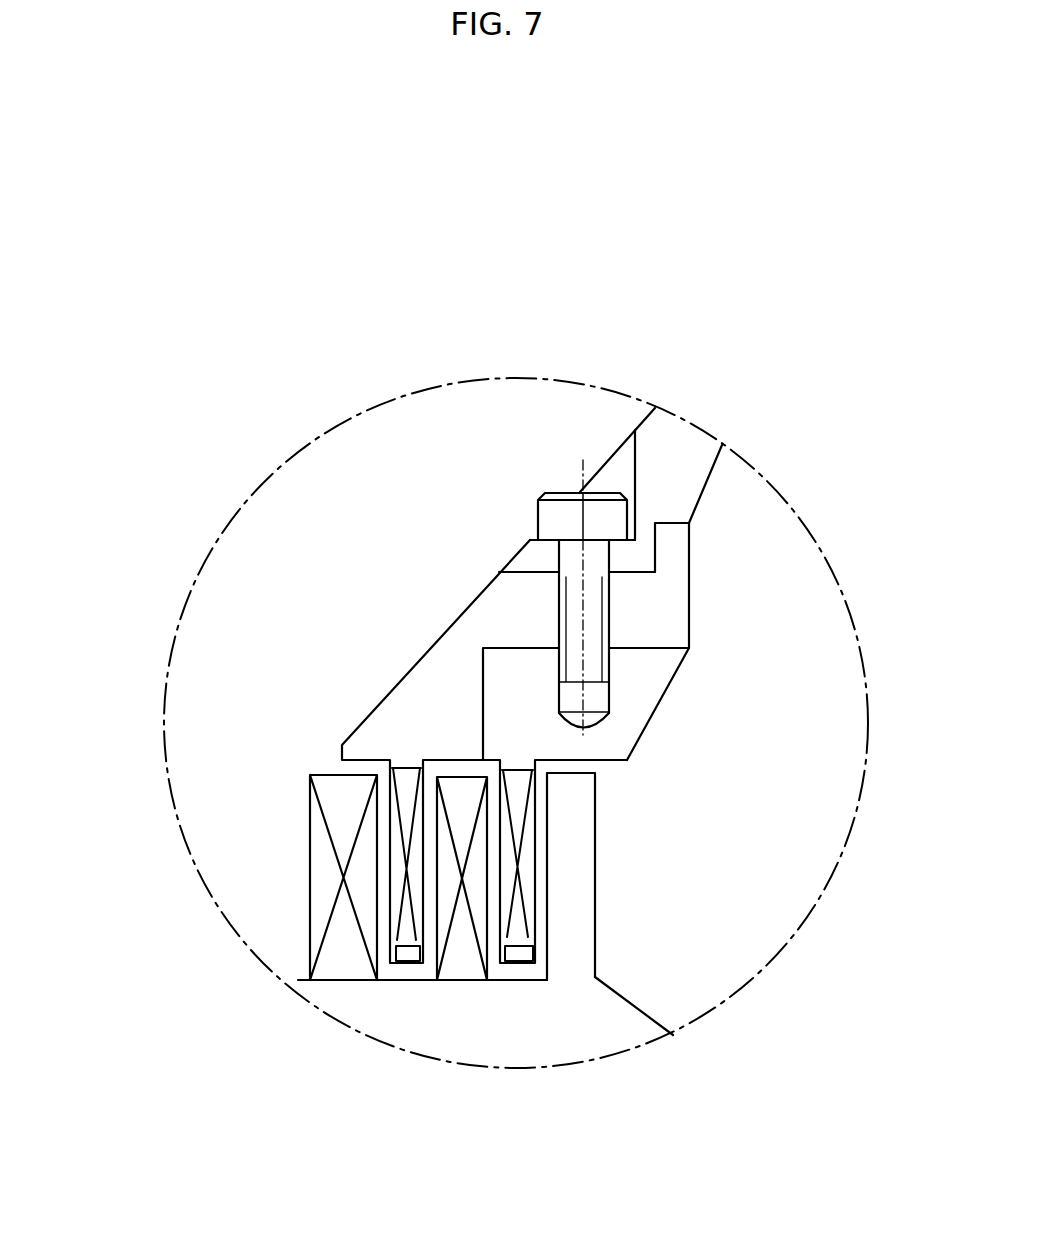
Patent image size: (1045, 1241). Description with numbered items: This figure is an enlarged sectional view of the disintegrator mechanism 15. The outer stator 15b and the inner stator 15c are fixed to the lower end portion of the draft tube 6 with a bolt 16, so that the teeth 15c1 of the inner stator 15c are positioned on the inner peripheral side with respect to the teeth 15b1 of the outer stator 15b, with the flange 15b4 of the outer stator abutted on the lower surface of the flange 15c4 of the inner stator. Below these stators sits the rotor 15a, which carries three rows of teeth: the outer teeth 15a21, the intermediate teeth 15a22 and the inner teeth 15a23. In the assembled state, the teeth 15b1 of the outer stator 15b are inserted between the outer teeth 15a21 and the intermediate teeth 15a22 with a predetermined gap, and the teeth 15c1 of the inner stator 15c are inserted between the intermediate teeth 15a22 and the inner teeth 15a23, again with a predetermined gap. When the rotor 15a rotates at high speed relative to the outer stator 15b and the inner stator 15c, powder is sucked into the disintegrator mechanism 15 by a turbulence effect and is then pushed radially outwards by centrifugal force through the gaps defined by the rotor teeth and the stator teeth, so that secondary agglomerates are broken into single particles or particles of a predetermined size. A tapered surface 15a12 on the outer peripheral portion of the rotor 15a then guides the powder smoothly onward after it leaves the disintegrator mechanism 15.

The draft tube 6 is at (680, 438).
The disintegrator mechanism 15 is at (479, 791).
The rotor 15a is at (598, 803).
The tapered surface 15a12 is at (642, 1007).
The outer teeth 15a21 is at (572, 853).
The intermediate teeth 15a22 is at (448, 873).
The inner teeth 15a23 is at (318, 843).
The outer stator 15b is at (535, 888).
The teeth of outer stator 15b1 is at (517, 932).
The flange 15b4 is at (638, 685).
The inner stator 15c is at (388, 903).
The teeth of inner stator 15c1 is at (405, 932).
The flange 15c4 is at (662, 613).
The bolt 16 is at (576, 623).